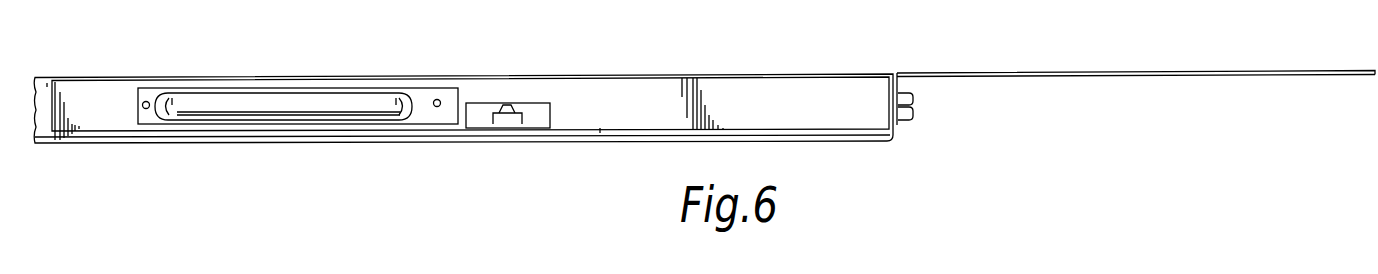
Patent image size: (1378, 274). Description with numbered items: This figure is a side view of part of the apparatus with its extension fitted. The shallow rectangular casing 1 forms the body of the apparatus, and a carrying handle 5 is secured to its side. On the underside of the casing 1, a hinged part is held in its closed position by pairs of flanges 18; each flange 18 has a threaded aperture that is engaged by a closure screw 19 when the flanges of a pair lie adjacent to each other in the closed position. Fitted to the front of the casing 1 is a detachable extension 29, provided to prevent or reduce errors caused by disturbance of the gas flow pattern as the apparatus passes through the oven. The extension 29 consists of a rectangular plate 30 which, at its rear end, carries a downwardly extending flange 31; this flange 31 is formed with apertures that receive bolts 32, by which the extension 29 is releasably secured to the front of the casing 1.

The casing 1 is at (482, 73).
The carrying handle 5 is at (232, 98).
The flange 18 is at (542, 130).
The closure screw 19 is at (507, 122).
The extension 29 is at (1109, 68).
The rectangular plate 30 is at (1243, 77).
The flange 31 is at (898, 82).
The bolt 32 is at (903, 114).